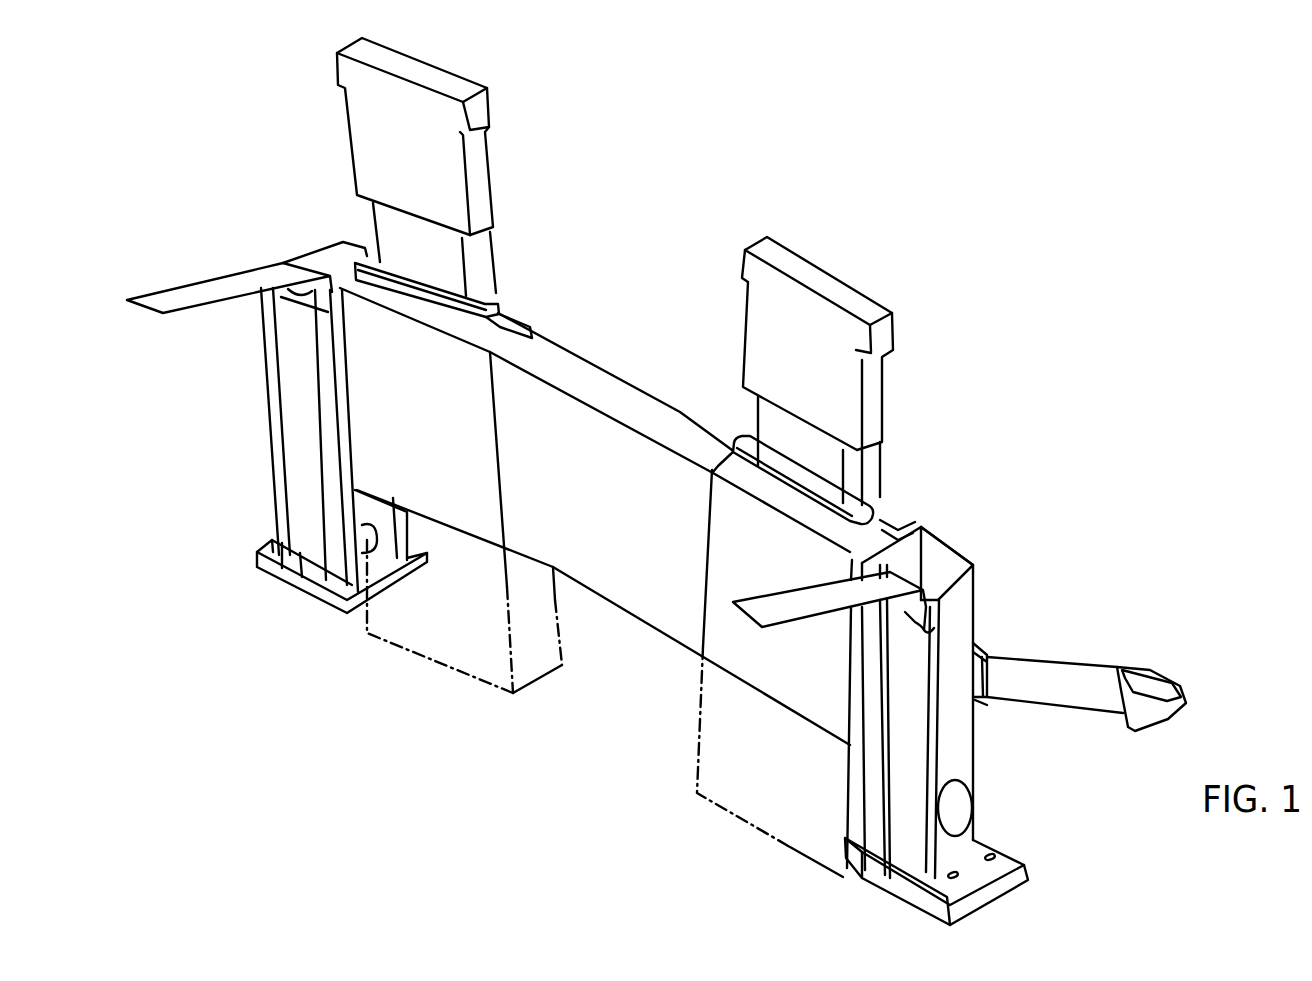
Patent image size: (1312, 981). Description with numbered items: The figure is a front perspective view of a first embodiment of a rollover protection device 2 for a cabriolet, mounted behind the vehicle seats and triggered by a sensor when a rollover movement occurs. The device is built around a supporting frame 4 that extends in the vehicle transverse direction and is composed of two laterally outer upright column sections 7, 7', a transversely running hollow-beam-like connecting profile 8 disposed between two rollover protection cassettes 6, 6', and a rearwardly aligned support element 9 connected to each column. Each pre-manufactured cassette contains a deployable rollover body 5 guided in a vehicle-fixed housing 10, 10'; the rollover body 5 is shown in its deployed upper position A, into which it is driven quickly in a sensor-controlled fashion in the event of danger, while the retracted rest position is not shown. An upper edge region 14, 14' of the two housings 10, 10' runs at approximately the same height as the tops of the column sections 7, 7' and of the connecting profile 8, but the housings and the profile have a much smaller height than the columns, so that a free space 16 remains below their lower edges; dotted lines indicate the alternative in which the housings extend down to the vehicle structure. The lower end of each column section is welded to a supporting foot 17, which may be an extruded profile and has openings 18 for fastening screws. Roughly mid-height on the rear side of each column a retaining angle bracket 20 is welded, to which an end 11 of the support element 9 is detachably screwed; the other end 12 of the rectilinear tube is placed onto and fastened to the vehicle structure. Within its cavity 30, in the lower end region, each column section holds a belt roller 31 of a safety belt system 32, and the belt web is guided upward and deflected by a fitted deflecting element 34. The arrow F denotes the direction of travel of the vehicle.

The rollover protection device 2 is at (915, 305).
The supporting frame 4 is at (666, 391).
The rollover body 5 is at (477, 172).
The rollover protection cassette 6 is at (835, 488).
The rollover protection cassette 6' is at (454, 290).
The column section 7 is at (932, 702).
The column section 7' is at (314, 390).
The connecting profile 8 is at (598, 383).
The support element 9 is at (1078, 665).
The housing 10 is at (770, 762).
The housing 10' is at (464, 600).
The end of support element 11 is at (983, 708).
The other end of support element 12 is at (1167, 667).
The upper edge region of housing 14 is at (737, 549).
The upper edge region of housing 14' is at (455, 455).
The free space 16 is at (632, 670).
The supporting foot 17 is at (263, 572).
The openings 18 is at (994, 857).
The retaining angle bracket 20 is at (987, 647).
The cavity 30 is at (933, 553).
The belt roller 31 is at (957, 807).
The safety belt system 32 is at (207, 306).
The deflecting element 34 is at (293, 292).
The upper position A is at (830, 260).
The arrow indicating direction of travel F is at (377, 717).